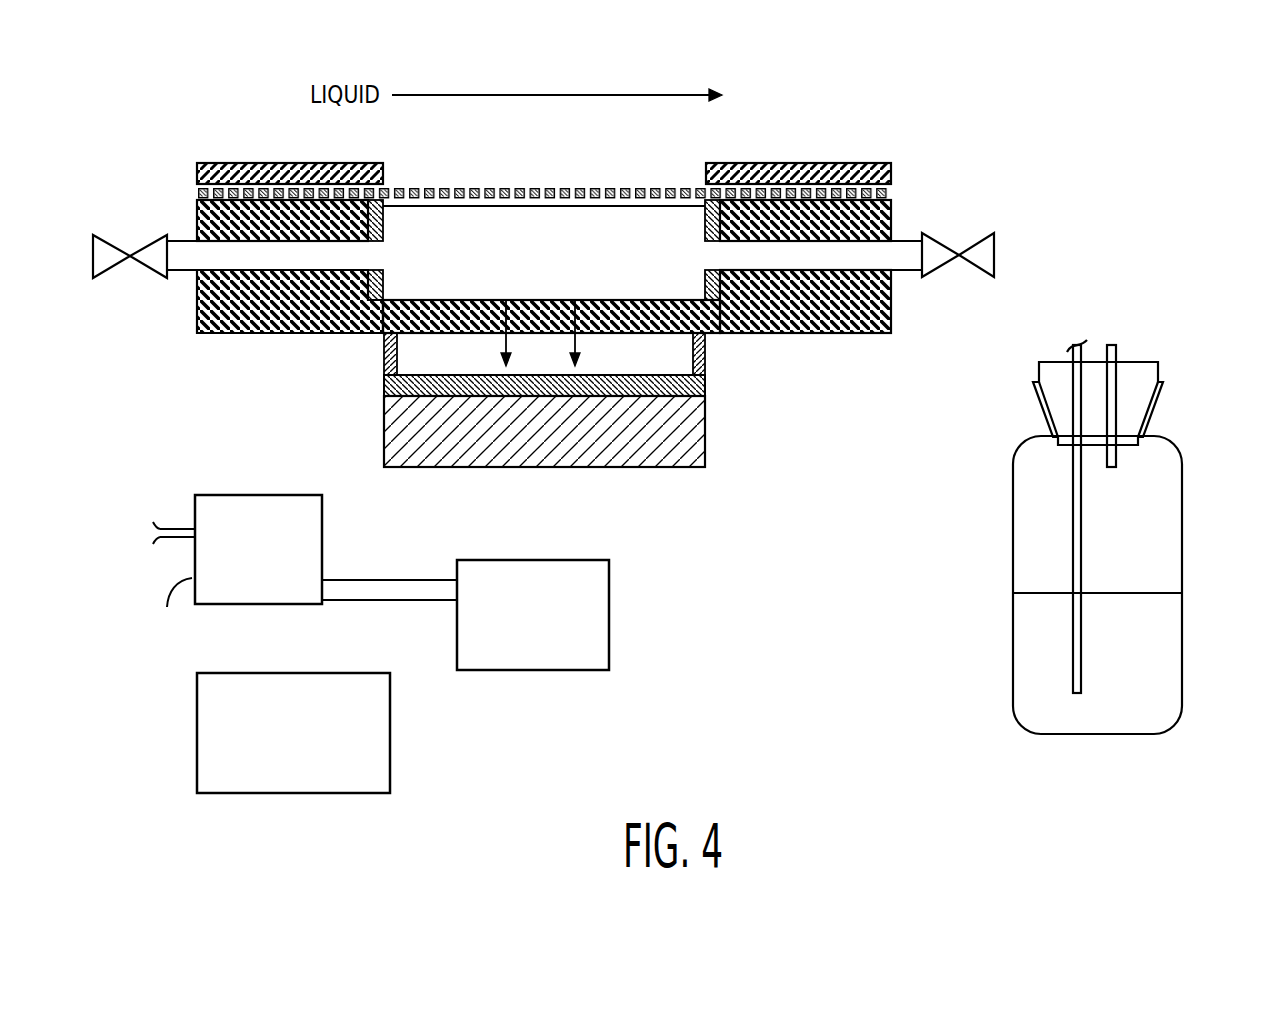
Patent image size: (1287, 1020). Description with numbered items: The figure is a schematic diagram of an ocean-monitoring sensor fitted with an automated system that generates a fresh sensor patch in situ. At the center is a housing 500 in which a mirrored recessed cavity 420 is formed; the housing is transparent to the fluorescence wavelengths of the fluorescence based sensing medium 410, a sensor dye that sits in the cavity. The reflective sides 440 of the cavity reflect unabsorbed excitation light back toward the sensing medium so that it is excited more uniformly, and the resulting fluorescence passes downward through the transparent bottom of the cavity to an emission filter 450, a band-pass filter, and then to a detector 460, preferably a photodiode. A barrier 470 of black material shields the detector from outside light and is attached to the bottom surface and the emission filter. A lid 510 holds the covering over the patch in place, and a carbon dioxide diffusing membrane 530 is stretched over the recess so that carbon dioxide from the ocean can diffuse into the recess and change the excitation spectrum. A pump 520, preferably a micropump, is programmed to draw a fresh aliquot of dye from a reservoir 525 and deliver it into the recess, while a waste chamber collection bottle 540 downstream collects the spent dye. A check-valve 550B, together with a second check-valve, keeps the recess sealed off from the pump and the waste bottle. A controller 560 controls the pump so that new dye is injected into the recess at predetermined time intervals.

The fluorescence based sensing medium 410 is at (636, 206).
The recessed cavity 420 is at (392, 212).
The reflective sides 440 is at (703, 285).
The emission filter 450 is at (700, 388).
The detector 460 is at (590, 457).
The barrier 470 is at (706, 350).
The housing 500 is at (103, 400).
The lid 510 is at (222, 163).
The pump 520 is at (322, 508).
The reservoir 525 is at (609, 612).
The CO2 diffusing membrane 530 is at (597, 188).
The waste chamber collection bottle 540 is at (1182, 523).
The check-valve 550B is at (947, 233).
The controller 560 is at (390, 730).